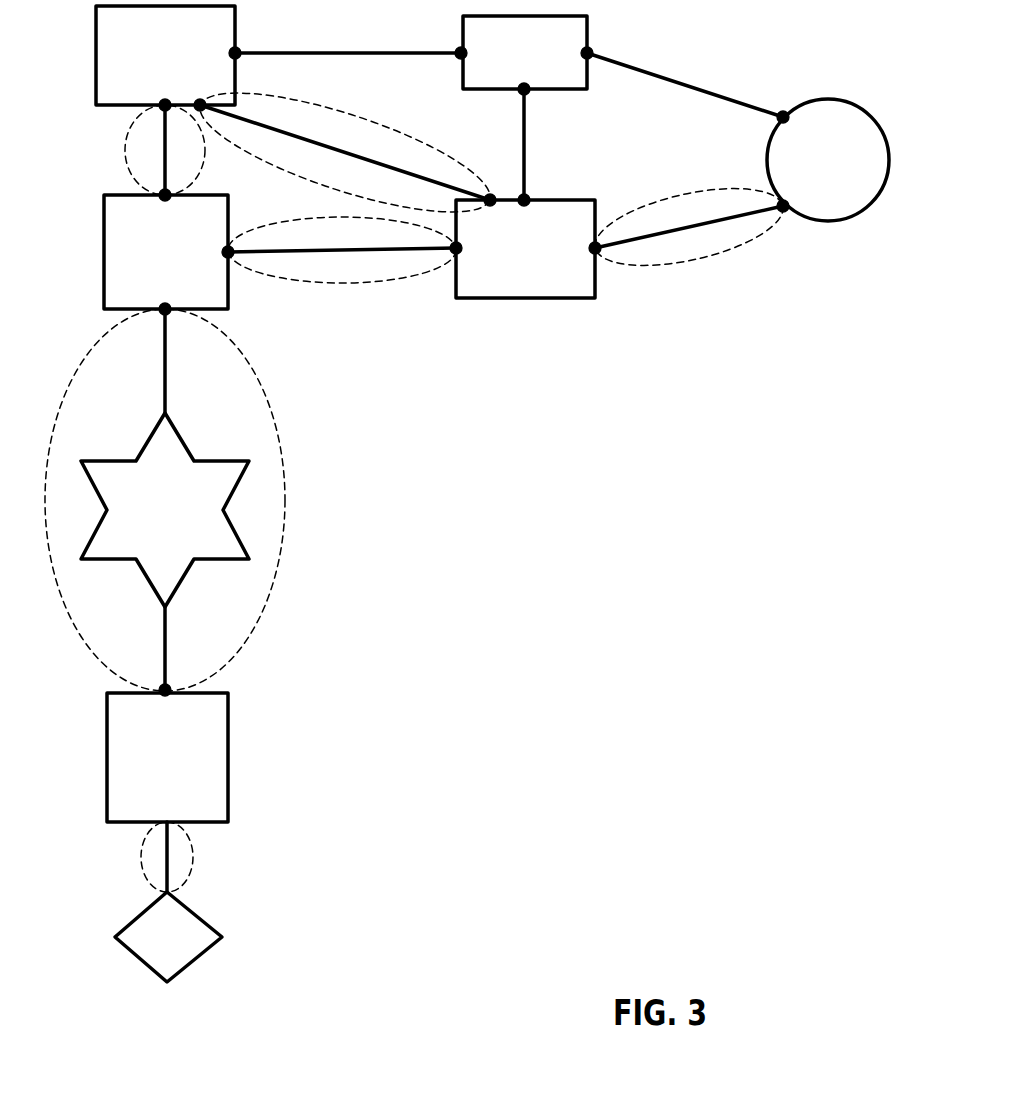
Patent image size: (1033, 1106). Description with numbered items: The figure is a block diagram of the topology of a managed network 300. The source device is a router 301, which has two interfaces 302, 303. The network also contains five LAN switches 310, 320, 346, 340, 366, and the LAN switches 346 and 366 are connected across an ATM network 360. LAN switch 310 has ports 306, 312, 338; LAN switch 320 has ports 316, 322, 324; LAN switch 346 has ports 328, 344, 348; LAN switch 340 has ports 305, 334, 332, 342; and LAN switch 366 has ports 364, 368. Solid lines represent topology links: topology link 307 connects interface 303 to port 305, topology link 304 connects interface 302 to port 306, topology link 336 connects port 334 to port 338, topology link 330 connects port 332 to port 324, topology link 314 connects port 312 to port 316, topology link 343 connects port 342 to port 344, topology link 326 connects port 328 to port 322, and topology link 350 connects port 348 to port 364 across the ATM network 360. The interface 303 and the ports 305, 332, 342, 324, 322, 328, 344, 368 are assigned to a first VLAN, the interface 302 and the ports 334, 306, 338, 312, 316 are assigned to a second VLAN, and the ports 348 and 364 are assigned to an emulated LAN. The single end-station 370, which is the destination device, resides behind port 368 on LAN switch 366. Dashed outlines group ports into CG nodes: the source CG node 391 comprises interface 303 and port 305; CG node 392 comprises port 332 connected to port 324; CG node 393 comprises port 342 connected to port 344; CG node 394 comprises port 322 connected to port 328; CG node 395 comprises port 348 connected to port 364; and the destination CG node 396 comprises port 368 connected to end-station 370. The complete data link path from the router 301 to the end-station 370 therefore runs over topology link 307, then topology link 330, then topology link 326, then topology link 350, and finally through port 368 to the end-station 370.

The managed network 300 is at (580, 486).
The router 301 is at (828, 160).
The interface 302 is at (780, 112).
The interface 303 is at (784, 212).
The topology link 304 is at (742, 94).
The port 305 is at (600, 254).
The port 306 is at (592, 50).
The topology link 307 is at (728, 224).
The LAN switch 310 is at (525, 52).
The port 312 is at (458, 48).
The topology link 314 is at (392, 52).
The port 316 is at (240, 48).
The LAN switch 320 is at (165, 55).
The port 322 is at (160, 108).
The port 324 is at (206, 102).
The topology link 326 is at (190, 158).
The port 328 is at (172, 192).
The topology link 330 is at (395, 162).
The port 332 is at (492, 196).
The port 334 is at (528, 196).
The topology link 336 is at (527, 170).
The port 338 is at (528, 94).
The LAN switch 340 is at (525, 249).
The port 342 is at (452, 256).
The topology link 343 is at (378, 247).
The port 344 is at (232, 258).
The LAN switch 346 is at (166, 252).
The port 348 is at (160, 311).
The topology link 350 is at (190, 378).
The ATM network 360 is at (165, 510).
The port 364 is at (172, 688).
The LAN switch 366 is at (167, 757).
The port 368 is at (175, 826).
The end-station 370 is at (168, 937).
The CG node 391 is at (742, 258).
The CG node 392 is at (412, 126).
The CG node 393 is at (378, 280).
The CG node 394 is at (133, 172).
The CG node 395 is at (46, 535).
The CG node 396 is at (150, 882).